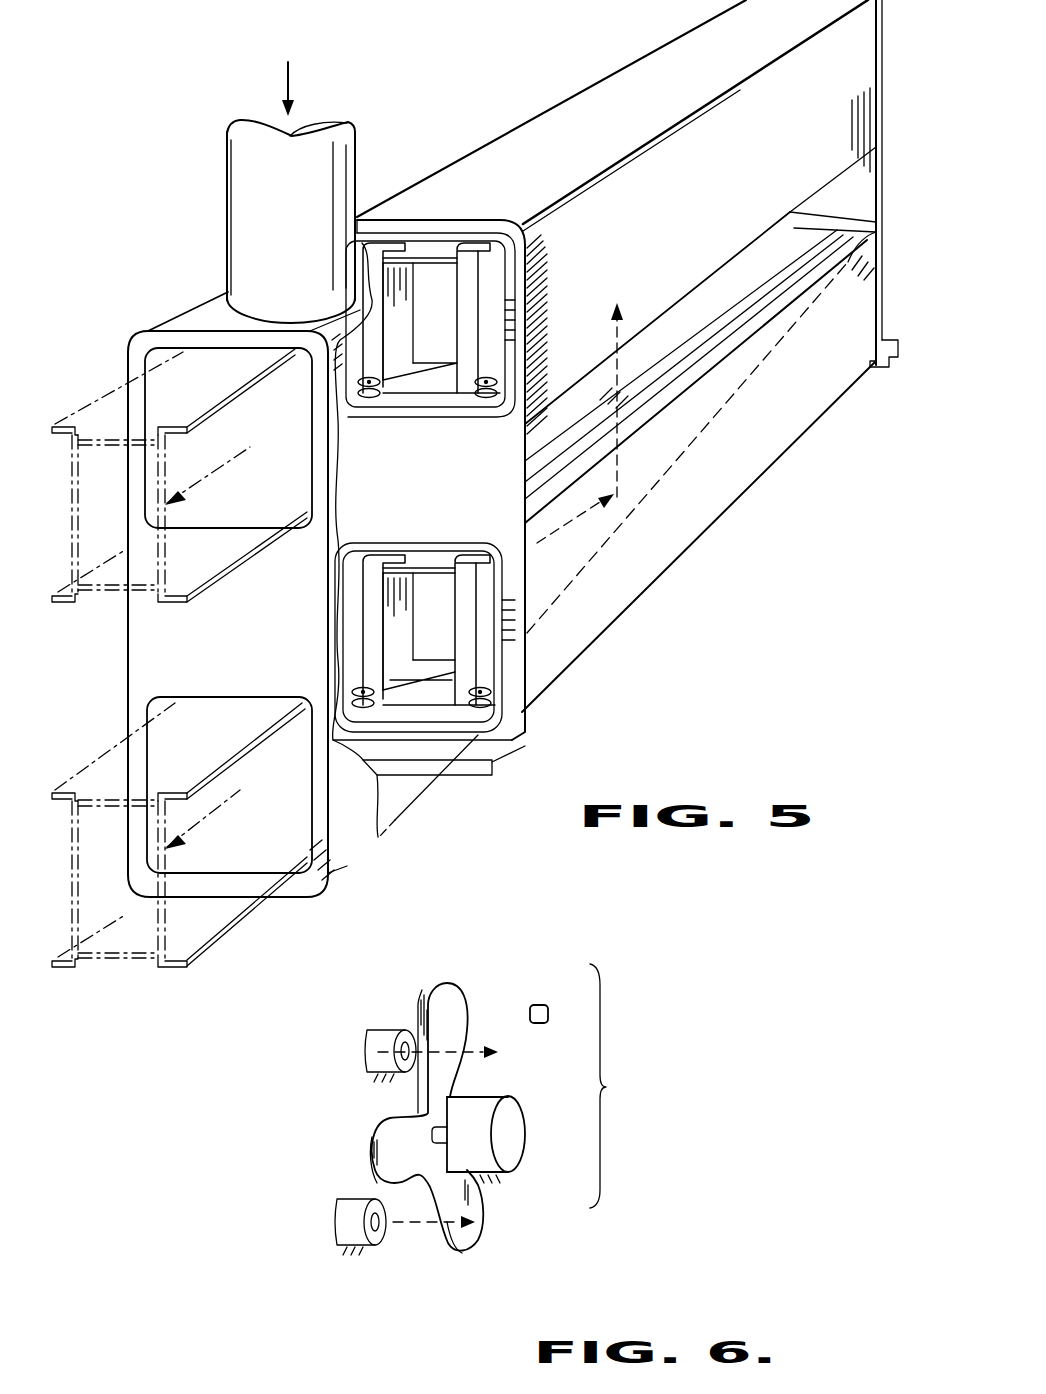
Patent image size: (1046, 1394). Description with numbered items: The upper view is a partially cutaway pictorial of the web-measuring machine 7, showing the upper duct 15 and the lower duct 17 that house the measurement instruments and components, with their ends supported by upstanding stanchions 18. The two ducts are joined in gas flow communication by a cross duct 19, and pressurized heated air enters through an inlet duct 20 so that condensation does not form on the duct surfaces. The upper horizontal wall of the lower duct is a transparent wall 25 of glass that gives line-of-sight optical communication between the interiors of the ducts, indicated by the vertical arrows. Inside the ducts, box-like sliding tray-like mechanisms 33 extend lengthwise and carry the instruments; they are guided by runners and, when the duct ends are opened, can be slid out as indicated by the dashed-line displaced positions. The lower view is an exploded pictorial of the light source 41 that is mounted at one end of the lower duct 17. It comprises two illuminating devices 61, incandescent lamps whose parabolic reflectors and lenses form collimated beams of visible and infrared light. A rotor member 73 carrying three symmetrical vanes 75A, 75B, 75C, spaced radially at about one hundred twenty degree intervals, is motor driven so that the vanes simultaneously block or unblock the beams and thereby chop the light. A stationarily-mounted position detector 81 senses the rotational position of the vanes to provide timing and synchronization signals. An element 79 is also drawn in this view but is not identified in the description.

In FIG. 5, the machine 7 is at (572, 74).
In FIG. 5, the duct 15 is at (773, 173).
In FIG. 5, the duct 17 is at (692, 542).
In FIG. 5, the stanchion 18 is at (523, 726).
In FIG. 5, the cross duct 19 is at (134, 652).
In FIG. 5, the inlet duct 20 is at (349, 168).
In FIG. 5, the transparent wall 25 is at (686, 334).
In FIG. 5, the sliding tray-like mechanism 33 is at (496, 327).
In FIG. 6, the light source 41 is at (621, 1086).
In FIG. 6, the illuminating device 61 is at (367, 1068).
In FIG. 6, the rotor member 73 is at (462, 1074).
In FIG. 6, the vane 75A is at (455, 998).
In FIG. 6, the vane 75B is at (372, 1160).
In FIG. 6, the vane 75C is at (477, 1240).
In FIG. 6, the hub 79 is at (517, 1128).
In FIG. 6, the position detector 81 is at (545, 1005).